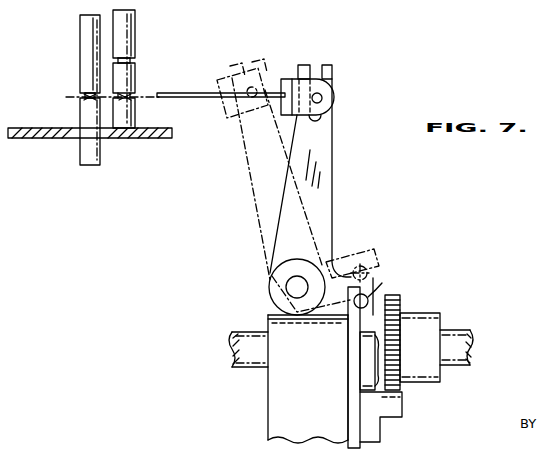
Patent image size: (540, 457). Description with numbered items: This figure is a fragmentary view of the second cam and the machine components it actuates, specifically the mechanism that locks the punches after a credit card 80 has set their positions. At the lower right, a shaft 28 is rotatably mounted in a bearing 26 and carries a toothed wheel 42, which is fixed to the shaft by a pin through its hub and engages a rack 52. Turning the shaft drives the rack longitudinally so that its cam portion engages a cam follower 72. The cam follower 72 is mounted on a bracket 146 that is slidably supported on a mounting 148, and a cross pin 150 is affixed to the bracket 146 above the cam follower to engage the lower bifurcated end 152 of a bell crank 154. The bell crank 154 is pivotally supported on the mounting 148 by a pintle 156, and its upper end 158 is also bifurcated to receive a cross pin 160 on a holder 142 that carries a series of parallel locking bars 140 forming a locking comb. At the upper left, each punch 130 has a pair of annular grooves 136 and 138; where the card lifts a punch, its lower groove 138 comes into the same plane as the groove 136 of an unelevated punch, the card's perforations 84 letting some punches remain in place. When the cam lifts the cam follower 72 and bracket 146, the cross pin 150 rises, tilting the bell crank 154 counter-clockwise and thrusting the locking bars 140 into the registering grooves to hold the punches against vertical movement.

The bearing 26 is at (276, 389).
The shaft 28 is at (464, 332).
The toothed wheel 42 is at (401, 301).
The rack 52 is at (402, 408).
The cam follower 72 is at (364, 364).
The credit card 80 is at (162, 138).
The perforations 84 is at (101, 138).
The punch 130 is at (133, 26).
The annular groove 136 is at (136, 63).
The annular groove 138 is at (137, 97).
The locking bar 140 is at (200, 99).
The holder 142 is at (329, 92).
The bracket 146 is at (354, 404).
The mounting 148 is at (270, 311).
The cross pin 150 is at (367, 298).
The lower bifurcated end 152 is at (371, 278).
The bell crank 154 is at (330, 190).
The pintle 156 is at (297, 287).
The upper end 158 is at (333, 70).
The cross pin 160 is at (321, 99).